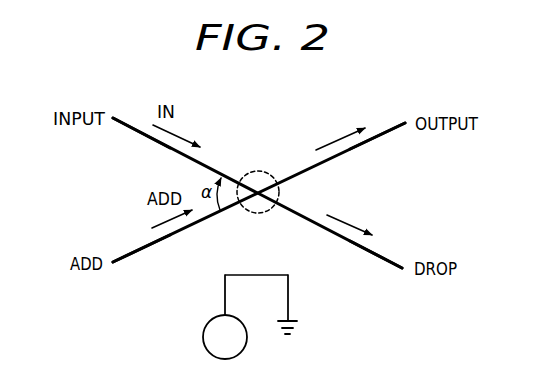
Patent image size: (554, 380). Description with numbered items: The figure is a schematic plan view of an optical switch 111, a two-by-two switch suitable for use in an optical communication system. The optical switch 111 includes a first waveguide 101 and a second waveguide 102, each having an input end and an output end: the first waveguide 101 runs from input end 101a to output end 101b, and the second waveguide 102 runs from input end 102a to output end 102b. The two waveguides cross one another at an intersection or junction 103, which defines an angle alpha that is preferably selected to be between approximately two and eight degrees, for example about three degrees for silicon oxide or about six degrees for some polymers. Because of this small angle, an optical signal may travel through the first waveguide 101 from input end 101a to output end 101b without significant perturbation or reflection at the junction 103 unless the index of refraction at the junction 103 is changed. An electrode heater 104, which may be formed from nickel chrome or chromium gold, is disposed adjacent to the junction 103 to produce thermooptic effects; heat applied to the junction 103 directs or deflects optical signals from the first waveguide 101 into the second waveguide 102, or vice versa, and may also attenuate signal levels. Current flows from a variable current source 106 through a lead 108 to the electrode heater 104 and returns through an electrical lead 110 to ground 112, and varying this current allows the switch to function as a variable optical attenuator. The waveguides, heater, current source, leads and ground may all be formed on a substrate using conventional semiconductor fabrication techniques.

The first waveguide 101 is at (128, 113).
The input end of first waveguide 101a is at (133, 130).
The output end of first waveguide 101b is at (394, 262).
The second waveguide 102 is at (122, 268).
The input end of second waveguide 102a is at (134, 252).
The output end of second waveguide 102b is at (383, 134).
The intersection or junction 103 is at (258, 171).
The electrode heater 104 is at (257, 273).
The variable current source 106 is at (203, 336).
The lead 108 is at (225, 288).
The electrical lead 110 is at (288, 288).
The optical switch 111 is at (384, 312).
The ground 112 is at (297, 326).